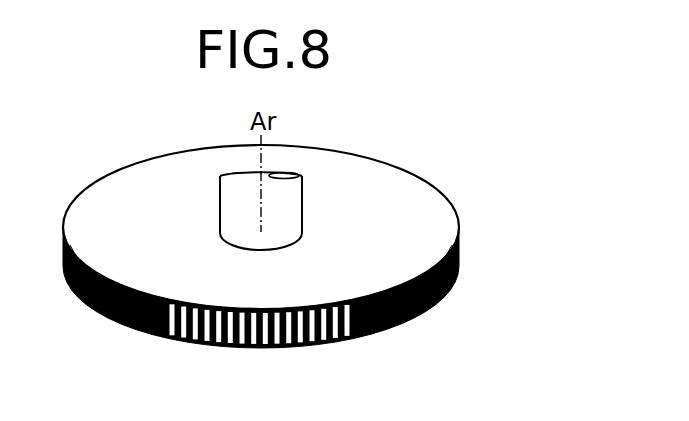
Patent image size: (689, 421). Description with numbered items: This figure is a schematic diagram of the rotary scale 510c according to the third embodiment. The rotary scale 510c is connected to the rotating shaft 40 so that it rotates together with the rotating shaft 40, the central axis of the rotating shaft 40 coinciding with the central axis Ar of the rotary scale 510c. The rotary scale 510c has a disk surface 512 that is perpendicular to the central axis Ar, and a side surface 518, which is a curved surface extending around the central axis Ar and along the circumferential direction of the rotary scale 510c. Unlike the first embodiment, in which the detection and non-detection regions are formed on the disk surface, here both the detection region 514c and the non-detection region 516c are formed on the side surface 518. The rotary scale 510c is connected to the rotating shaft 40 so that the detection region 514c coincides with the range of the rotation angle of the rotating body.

The rotary scale 510c is at (578, 128).
The disk surface 512 is at (430, 213).
The side surface 518 is at (462, 255).
The detection region 514c is at (281, 353).
The non-detection region 516c is at (93, 316).
The rotating shaft 40 is at (302, 196).